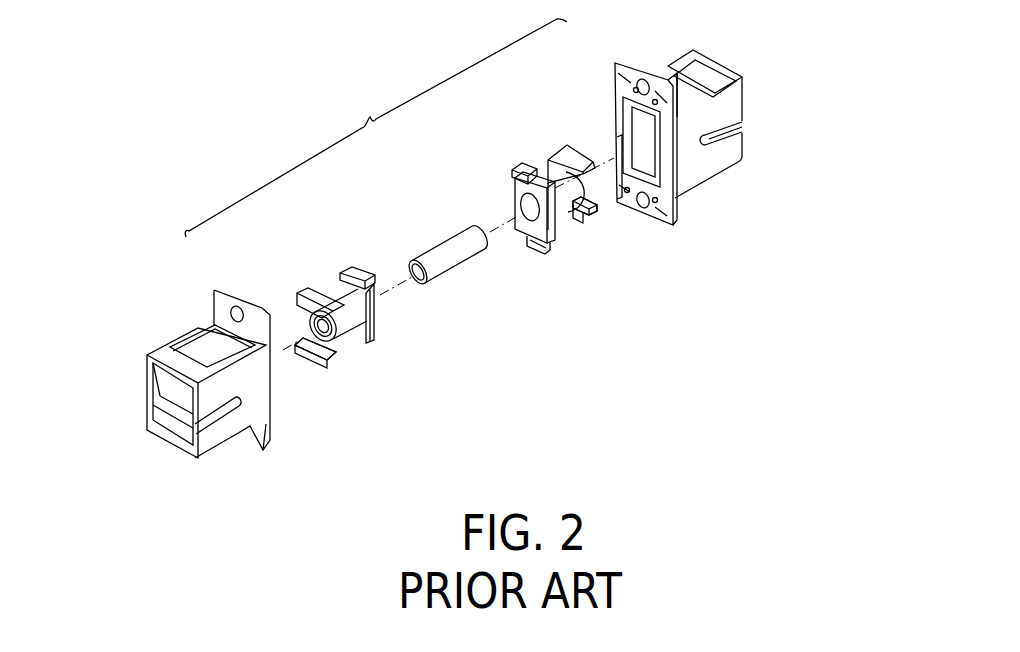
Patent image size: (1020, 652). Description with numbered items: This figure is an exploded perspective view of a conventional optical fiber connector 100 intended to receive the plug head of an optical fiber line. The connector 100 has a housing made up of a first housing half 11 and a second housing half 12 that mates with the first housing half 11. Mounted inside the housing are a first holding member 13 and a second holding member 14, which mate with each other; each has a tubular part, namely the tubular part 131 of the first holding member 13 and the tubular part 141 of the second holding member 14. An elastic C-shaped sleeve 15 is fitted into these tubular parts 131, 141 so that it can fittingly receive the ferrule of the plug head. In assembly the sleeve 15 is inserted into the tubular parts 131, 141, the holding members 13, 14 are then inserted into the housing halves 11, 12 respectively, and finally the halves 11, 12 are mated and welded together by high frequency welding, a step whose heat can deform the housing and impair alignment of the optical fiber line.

The optical fiber connector 100 is at (376, 128).
The first housing half 11 is at (224, 462).
The second housing half 12 is at (733, 197).
The first holding member 13 is at (358, 377).
The tubular part 131 is at (348, 330).
The second holding member 14 is at (562, 245).
The tubular part 141 is at (553, 222).
The elastic C-shaped sleeve 15 is at (450, 265).